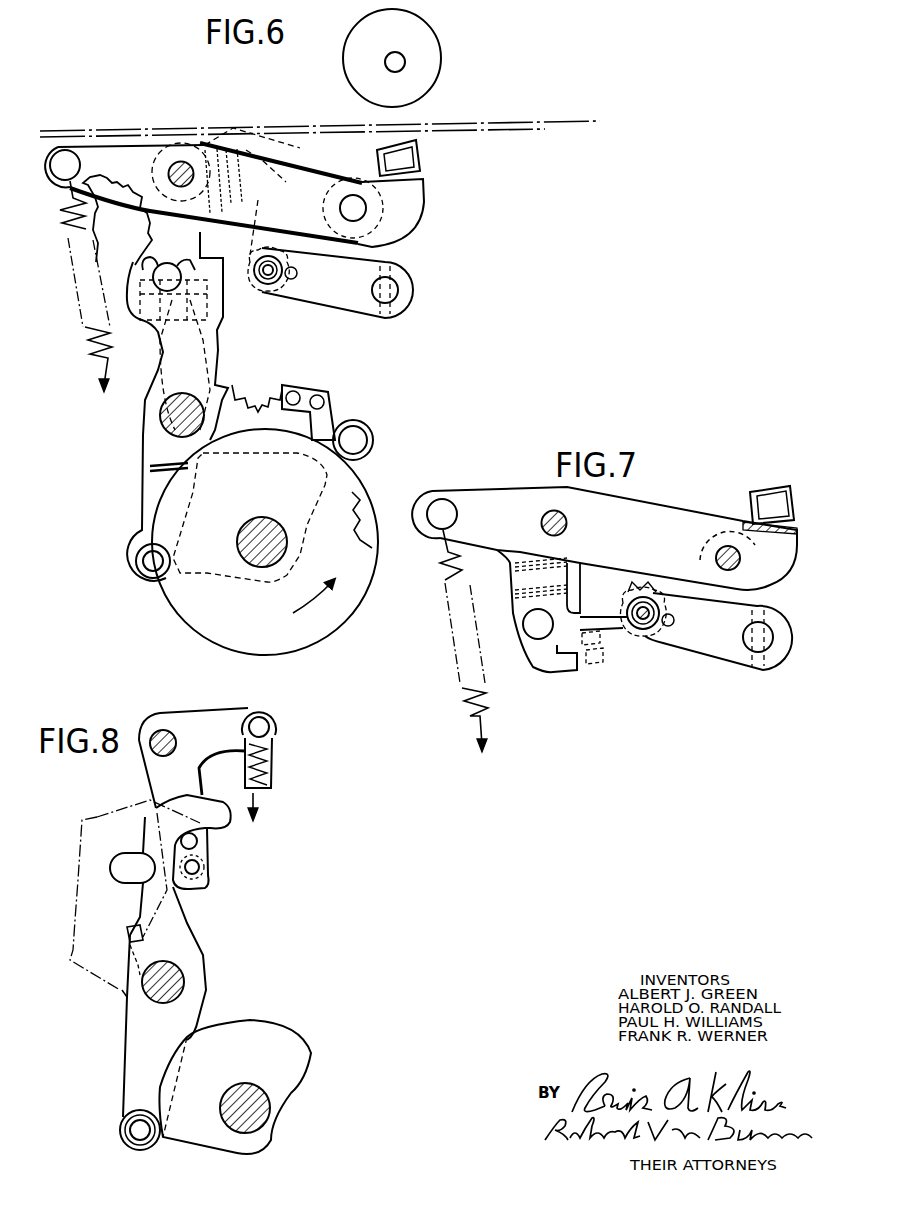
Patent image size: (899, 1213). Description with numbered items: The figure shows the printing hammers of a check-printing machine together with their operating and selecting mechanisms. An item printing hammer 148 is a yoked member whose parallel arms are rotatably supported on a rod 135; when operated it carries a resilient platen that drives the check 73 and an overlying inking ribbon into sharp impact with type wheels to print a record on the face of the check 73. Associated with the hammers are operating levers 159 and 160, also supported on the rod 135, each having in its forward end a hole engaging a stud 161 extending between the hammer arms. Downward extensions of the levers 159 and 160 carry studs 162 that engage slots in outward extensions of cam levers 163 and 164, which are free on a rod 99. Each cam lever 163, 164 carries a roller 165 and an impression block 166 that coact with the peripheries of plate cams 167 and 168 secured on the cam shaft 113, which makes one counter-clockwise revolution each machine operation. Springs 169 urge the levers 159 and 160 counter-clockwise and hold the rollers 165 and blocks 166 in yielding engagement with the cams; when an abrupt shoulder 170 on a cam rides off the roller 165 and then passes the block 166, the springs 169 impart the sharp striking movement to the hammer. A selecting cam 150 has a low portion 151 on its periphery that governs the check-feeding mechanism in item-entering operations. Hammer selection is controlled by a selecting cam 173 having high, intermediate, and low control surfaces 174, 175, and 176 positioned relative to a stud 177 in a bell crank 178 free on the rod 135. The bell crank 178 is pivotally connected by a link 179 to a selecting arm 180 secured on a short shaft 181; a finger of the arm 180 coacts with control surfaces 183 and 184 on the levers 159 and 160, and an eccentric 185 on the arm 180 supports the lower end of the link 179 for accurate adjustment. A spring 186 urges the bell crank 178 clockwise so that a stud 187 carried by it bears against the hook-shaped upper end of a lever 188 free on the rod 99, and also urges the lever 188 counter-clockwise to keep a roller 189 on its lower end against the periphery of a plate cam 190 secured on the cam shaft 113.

In FIG. 6, the check 73 is at (331, 124).
In FIG. 6, the rod 99 is at (178, 405).
In FIG. 8, the rod 99 is at (183, 983).
In FIG. 6, the cam shaft 113 is at (276, 544).
In FIG. 8, the cam shaft 113 is at (258, 1107).
In FIG. 6, the rod 135 is at (167, 172).
In FIG. 7, the rod 135 is at (570, 522).
In FIG. 8, the rod 135 is at (158, 730).
In FIG. 6, the item printing hammer 148 is at (410, 200).
In FIG. 7, the item printing hammer 148 is at (770, 583).
In FIG. 6, the selecting cam 150 is at (430, 60).
In FIG. 6, the low portion 151 is at (387, 68).
In FIG. 6, the operating lever 159 is at (68, 182).
In FIG. 7, the operating lever 159 is at (520, 625).
In FIG. 6, the operating lever 160 is at (108, 188).
In FIG. 7, the operating lever 160 is at (538, 662).
In FIG. 6, the stud 161 is at (340, 208).
In FIG. 7, the stud 161 is at (725, 546).
In FIG. 6, the stud 162 is at (158, 270).
In FIG. 7, the stud 162 is at (535, 615).
In FIG. 6, the cam lever 163 is at (215, 336).
In FIG. 6, the cam lever 164 is at (255, 395).
In FIG. 6, the roller 165 is at (372, 428).
In FIG. 6, the impression block 166 is at (330, 410).
In FIG. 6, the plate cam 167 is at (340, 483).
In FIG. 6, the plate cam 168 is at (362, 510).
In FIG. 6, the spring 169 is at (65, 222).
In FIG. 7, the spring 169 is at (443, 573).
In FIG. 6, the shoulder 170 is at (150, 556).
In FIG. 8, the selecting cam 173 is at (97, 812).
In FIG. 8, the high control surface 174 is at (125, 1000).
In FIG. 8, the intermediate control surface 175 is at (150, 937).
In FIG. 8, the low control surface 176 is at (140, 940).
In FIG. 8, the stud 177 is at (200, 867).
In FIG. 6, the bell crank 178 is at (262, 150).
In FIG. 8, the bell crank 178 is at (199, 765).
In FIG. 6, the link 179 is at (305, 162).
In FIG. 7, the link 179 is at (653, 577).
In FIG. 8, the link 179 is at (273, 757).
In FIG. 7, the selecting arm 180 is at (692, 642).
In FIG. 6, the short shaft 181 is at (400, 290).
In FIG. 7, the short shaft 181 is at (748, 643).
In FIG. 7, the control surface 183 is at (600, 640).
In FIG. 7, the control surface 184 is at (587, 662).
In FIG. 7, the eccentric 185 is at (674, 613).
In FIG. 8, the spring 186 is at (261, 791).
In FIG. 8, the stud 187 is at (197, 842).
In FIG. 8, the lever 188 is at (148, 897).
In FIG. 8, the roller 189 is at (125, 1127).
In FIG. 8, the plate cam 190 is at (197, 1130).